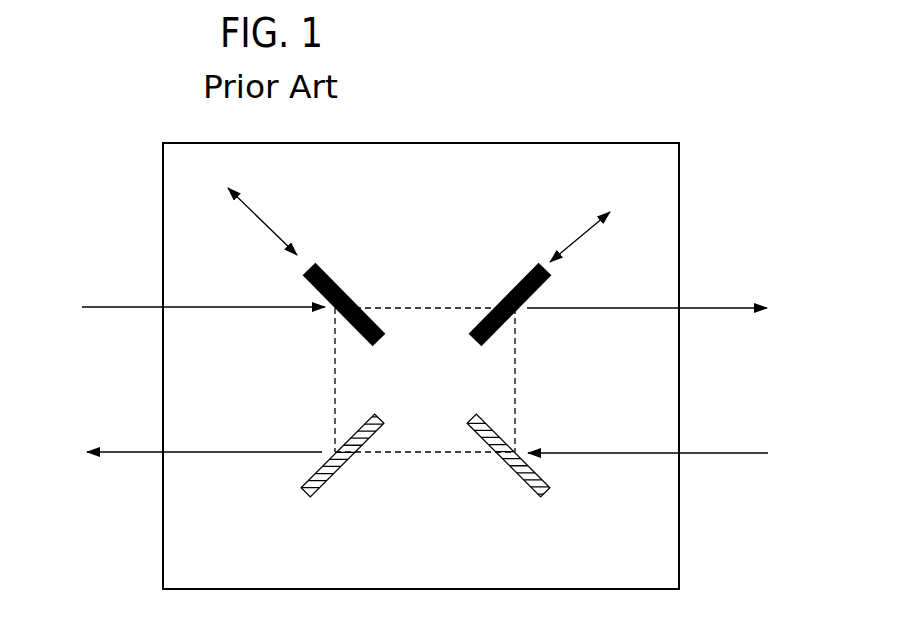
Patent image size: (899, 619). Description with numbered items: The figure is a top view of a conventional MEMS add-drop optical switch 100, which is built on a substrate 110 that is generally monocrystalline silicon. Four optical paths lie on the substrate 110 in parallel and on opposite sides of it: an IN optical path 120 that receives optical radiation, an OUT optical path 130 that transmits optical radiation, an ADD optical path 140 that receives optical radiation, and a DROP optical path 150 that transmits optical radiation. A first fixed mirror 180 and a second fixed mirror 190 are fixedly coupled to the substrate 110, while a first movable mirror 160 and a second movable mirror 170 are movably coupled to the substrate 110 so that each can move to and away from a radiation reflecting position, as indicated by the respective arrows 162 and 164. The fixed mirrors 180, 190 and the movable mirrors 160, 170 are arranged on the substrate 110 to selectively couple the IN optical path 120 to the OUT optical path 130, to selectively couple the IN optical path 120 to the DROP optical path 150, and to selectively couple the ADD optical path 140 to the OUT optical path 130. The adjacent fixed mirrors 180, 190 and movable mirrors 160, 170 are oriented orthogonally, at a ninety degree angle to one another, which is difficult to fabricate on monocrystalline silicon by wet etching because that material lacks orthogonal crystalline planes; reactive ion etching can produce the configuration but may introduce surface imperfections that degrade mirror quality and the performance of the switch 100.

The MEMS add-drop optical switch 100 is at (702, 238).
The substrate 110 is at (555, 143).
The IN optical path 120 is at (222, 307).
The OUT optical path 130 is at (625, 308).
The ADD optical path 140 is at (598, 453).
The DROP optical path 150 is at (245, 450).
The first movable mirror 160 is at (337, 283).
The arrow 162 is at (258, 213).
The arrow 164 is at (598, 215).
The second movable mirror 170 is at (515, 285).
The first fixed mirror 180 is at (343, 465).
The second fixed mirror 190 is at (515, 472).